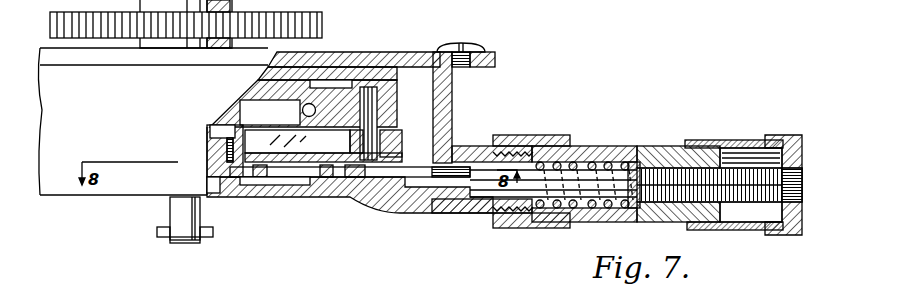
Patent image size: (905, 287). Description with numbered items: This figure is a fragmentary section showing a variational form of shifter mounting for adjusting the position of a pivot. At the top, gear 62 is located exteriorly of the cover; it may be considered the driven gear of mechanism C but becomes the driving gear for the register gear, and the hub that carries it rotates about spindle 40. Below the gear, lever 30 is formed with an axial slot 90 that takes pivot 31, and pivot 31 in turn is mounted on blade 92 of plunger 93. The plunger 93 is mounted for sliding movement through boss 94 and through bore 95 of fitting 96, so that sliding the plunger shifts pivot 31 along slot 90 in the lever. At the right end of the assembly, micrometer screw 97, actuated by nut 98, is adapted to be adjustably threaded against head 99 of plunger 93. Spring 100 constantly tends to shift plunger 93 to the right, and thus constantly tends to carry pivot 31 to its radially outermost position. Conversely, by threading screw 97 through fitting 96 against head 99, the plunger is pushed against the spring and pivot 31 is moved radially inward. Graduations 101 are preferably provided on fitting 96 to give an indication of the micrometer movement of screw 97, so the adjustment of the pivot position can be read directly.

The gear 62 is at (302, 33).
The lever 30 is at (233, 175).
The spindle 40 is at (175, 212).
The axial slot 90 is at (267, 173).
The pivot 31 is at (328, 177).
The blade 92 is at (386, 180).
The plunger 93 is at (475, 172).
The boss 94 is at (508, 158).
The fitting 96 is at (573, 150).
The spring 100 is at (552, 207).
The bore 95 is at (600, 160).
The head 99 is at (637, 160).
The graduations 101 is at (668, 143).
The micrometer screw 97 is at (735, 192).
The nut 98 is at (747, 140).